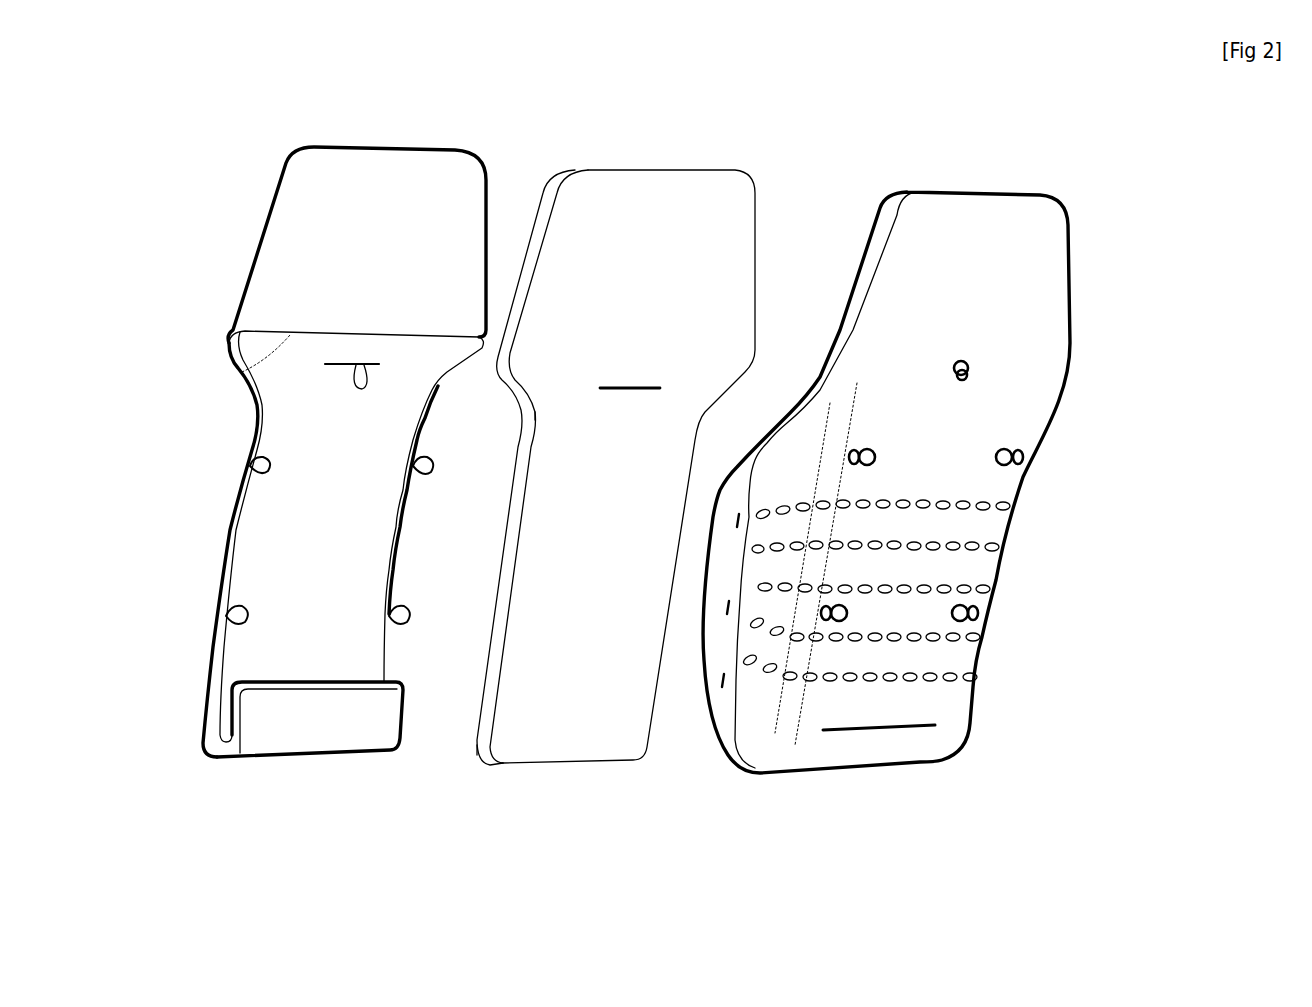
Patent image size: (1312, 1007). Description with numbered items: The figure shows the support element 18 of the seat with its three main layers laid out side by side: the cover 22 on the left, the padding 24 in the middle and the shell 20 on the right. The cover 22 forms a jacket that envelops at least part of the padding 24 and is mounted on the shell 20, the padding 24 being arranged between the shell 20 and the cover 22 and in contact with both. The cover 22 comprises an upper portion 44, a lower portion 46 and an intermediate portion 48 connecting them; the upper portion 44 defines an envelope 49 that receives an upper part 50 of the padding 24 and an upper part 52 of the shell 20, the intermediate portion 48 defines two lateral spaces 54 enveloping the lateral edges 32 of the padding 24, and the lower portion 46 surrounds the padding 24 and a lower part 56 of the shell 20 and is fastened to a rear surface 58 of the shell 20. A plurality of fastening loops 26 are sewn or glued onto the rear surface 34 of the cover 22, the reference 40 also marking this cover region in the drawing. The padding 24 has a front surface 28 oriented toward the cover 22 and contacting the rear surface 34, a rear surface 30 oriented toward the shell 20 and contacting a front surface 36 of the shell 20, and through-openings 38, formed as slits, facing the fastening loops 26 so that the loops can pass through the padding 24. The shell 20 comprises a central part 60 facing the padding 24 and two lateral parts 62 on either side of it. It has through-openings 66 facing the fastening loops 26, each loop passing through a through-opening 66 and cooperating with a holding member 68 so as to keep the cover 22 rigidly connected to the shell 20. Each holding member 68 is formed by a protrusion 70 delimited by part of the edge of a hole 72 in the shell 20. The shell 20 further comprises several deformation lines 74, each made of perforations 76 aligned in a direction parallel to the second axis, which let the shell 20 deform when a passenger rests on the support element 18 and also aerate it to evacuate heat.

The support element 18 is at (676, 144).
The shell 20 is at (1075, 198).
The cover 22 is at (416, 132).
The padding 24 is at (734, 162).
The fastening loops 26 is at (232, 605).
The front surface 28 is at (500, 505).
The rear surface 30 is at (616, 525).
The lateral edges 32 is at (483, 710).
The rear surface 34 is at (344, 525).
The front surface 36 is at (838, 324).
The through-openings 38 is at (630, 385).
The inner panel side edge 40 is at (240, 438).
The upper portion 44 is at (278, 243).
The lower portion 46 is at (262, 740).
The intermediate portion 48 is at (212, 626).
The envelope 49 is at (242, 372).
The upper part 50 is at (573, 232).
The upper part 52 is at (897, 242).
The lateral spaces 54 is at (232, 548).
The lower part 56 is at (953, 703).
The rear surface 58 is at (956, 468).
The central part 60 is at (880, 747).
The lateral parts 62 is at (714, 702).
The through-openings 66 is at (1022, 457).
The holding members 68 is at (968, 378).
The protrusion 70 is at (823, 622).
The hole 72 is at (850, 622).
The deformation lines 74 is at (985, 598).
The perforations 76 is at (957, 553).